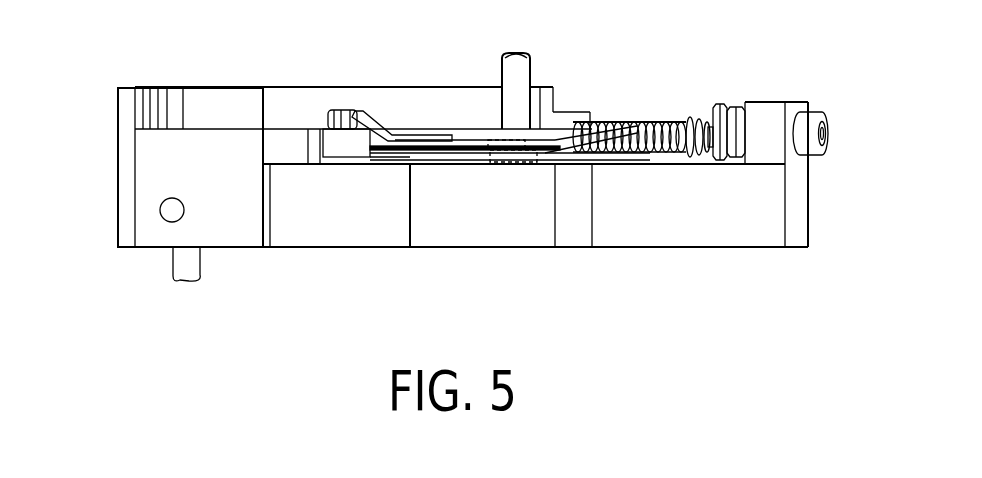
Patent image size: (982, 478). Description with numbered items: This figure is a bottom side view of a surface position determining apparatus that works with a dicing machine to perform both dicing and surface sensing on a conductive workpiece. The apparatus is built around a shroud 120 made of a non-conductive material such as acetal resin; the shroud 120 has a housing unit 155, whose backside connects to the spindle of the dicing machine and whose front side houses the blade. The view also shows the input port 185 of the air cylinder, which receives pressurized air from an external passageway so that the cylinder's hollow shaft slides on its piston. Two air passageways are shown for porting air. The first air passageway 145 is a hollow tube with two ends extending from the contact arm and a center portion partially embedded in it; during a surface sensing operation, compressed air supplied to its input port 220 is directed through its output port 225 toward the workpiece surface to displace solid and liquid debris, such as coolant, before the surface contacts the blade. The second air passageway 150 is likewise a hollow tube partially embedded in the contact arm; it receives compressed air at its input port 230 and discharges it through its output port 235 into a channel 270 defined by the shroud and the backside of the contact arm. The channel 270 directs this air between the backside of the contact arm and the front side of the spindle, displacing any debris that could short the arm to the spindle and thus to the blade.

The housing unit 155 is at (251, 88).
The shroud 120 is at (446, 248).
The first air passageway 145 is at (436, 140).
The output port 225 is at (358, 110).
The channel 270 is at (370, 165).
The second air passageway 150 is at (579, 165).
The output port 235 is at (497, 163).
The input port 220 is at (645, 121).
The input port 230 is at (650, 165).
The input port 185 is at (829, 133).